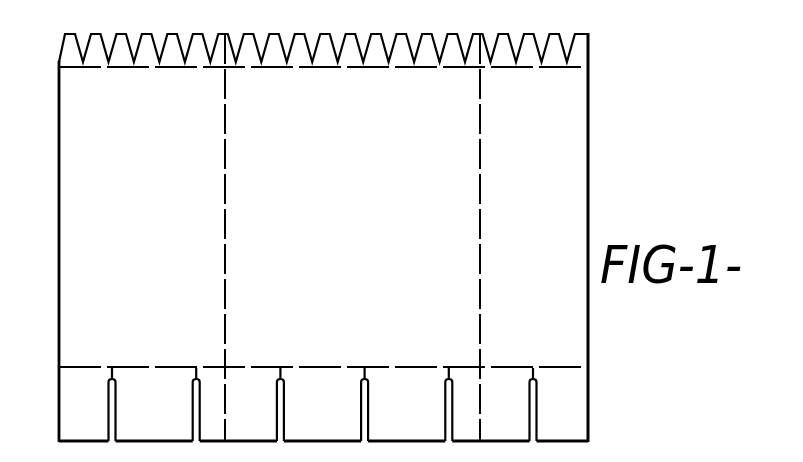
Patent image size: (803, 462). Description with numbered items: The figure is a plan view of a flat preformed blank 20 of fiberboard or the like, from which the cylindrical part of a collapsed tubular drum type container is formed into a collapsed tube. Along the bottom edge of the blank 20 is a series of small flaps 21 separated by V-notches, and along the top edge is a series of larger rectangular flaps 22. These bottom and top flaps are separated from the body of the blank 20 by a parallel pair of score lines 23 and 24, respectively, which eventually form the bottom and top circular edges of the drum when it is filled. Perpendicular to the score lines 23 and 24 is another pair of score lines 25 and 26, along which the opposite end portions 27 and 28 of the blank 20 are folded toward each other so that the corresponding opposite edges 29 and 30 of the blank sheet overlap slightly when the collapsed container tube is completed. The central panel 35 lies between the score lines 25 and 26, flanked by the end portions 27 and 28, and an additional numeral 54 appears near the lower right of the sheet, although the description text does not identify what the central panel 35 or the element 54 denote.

The blank 20 is at (330, 231).
The small flaps 21 is at (501, 33).
The larger rectangular flaps 22 is at (353, 436).
The score line 23 is at (373, 68).
The score line 24 is at (351, 365).
The score line 25 is at (225, 229).
The score line 26 is at (480, 203).
The end portion 27 is at (152, 243).
The end portion 28 is at (546, 177).
The edge 29 is at (60, 223).
The edge 30 is at (585, 138).
The center panel 35 is at (360, 200).
The element 54 is at (712, 453).